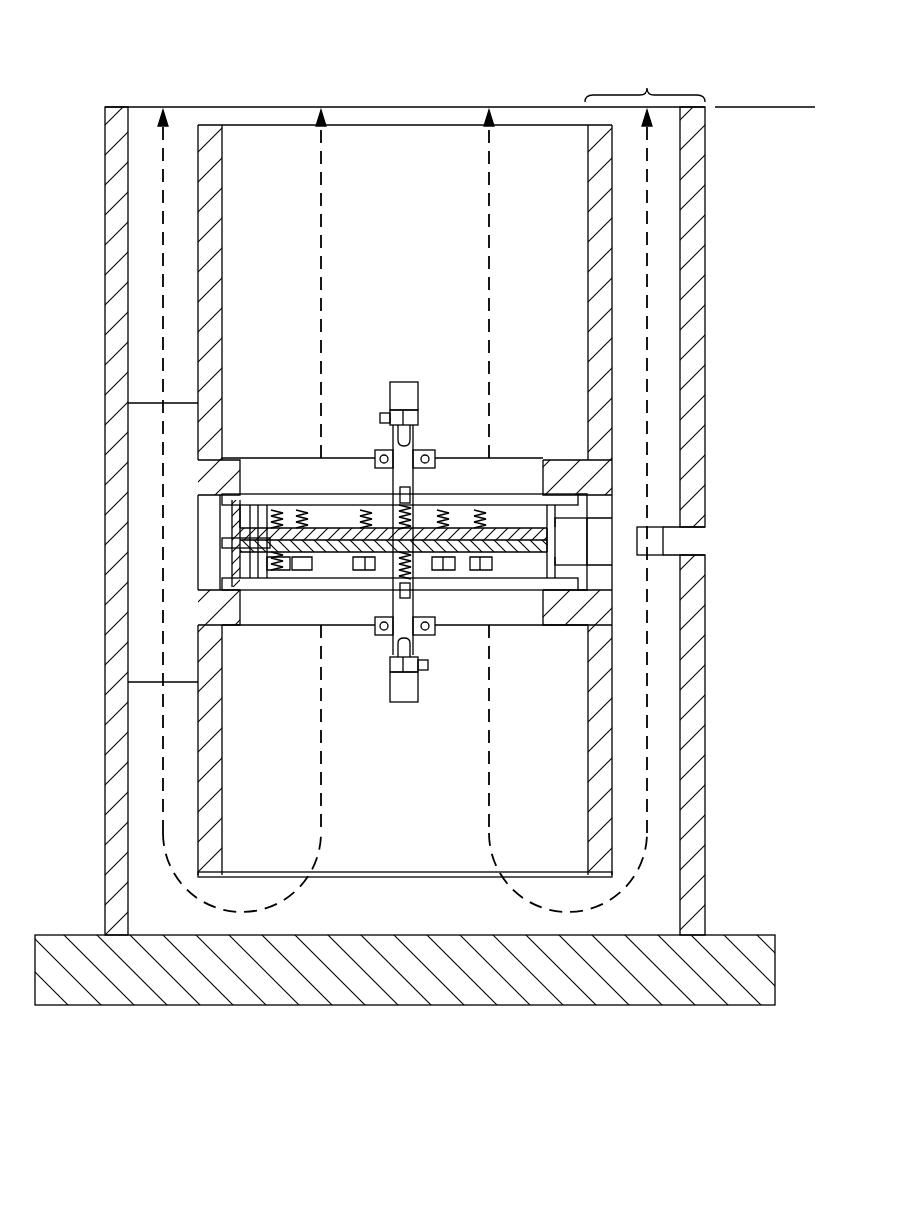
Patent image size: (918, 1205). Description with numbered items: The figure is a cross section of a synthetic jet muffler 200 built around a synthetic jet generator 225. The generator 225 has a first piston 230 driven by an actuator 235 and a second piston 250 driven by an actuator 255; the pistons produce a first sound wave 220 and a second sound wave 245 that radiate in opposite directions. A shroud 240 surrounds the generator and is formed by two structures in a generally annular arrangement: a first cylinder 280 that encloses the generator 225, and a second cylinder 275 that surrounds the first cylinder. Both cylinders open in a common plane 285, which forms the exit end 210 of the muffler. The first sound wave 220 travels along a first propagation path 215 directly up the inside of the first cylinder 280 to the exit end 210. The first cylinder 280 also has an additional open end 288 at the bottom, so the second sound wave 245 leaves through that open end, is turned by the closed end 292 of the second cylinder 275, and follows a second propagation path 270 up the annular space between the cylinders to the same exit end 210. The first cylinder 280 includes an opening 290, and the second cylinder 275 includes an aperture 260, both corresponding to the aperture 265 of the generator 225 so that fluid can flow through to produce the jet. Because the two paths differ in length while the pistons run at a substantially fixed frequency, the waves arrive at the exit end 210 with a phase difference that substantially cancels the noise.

The synthetic jet muffler 200 is at (550, 48).
The exit end 210 is at (96, 106).
The first propagation path 215 is at (415, 288).
The first sound wave 220 is at (489, 225).
The synthetic jet generator 225 is at (222, 537).
The first piston 230 is at (497, 533).
The actuator 235 is at (403, 382).
The shroud 240 is at (648, 92).
The second sound wave 245 is at (489, 763).
The second piston 250 is at (335, 553).
The actuator 255 is at (405, 693).
The aperture 260 is at (712, 540).
The aperture 265 is at (557, 550).
The second propagation path 270 is at (313, 887).
The second cylinder 275 is at (117, 107).
The first cylinder 280 is at (210, 125).
The common plane 285 is at (742, 107).
The open end 288 is at (553, 877).
The opening 290 is at (602, 533).
The closed end 292 is at (212, 988).